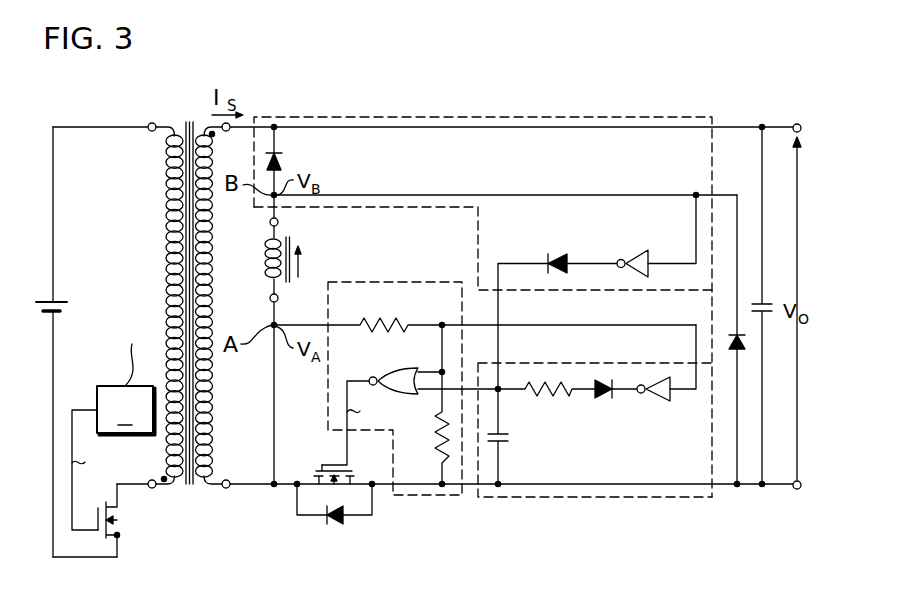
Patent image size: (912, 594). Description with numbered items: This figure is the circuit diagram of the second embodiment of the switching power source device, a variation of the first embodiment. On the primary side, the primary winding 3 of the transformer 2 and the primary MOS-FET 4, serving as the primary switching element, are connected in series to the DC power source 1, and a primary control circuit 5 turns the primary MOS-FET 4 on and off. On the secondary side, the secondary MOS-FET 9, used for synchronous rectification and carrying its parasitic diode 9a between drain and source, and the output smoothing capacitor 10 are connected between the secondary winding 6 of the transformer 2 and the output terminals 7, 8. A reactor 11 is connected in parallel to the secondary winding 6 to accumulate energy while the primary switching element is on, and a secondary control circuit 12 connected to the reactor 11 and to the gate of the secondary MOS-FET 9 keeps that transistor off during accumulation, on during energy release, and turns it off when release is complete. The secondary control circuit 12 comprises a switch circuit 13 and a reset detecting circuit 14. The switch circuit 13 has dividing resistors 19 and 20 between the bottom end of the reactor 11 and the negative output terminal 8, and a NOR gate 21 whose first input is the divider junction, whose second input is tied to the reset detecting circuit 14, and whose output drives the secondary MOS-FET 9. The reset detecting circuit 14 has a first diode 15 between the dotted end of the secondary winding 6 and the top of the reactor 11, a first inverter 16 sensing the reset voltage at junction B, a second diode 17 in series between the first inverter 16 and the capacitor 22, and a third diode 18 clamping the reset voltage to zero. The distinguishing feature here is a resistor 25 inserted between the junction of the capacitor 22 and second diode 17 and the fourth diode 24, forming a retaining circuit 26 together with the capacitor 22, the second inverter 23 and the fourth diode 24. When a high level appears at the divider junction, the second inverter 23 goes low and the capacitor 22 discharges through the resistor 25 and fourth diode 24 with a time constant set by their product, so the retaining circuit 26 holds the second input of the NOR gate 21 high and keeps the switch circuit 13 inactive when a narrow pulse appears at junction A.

The DC power source 1 is at (64, 299).
The transformer 2 is at (190, 126).
The primary winding 3 is at (166, 266).
The primary MOS-FET 4 is at (119, 520).
The primary control circuit 5 is at (113, 403).
The secondary winding 6 is at (215, 399).
The output terminal 7 is at (797, 123).
The negative output terminal 8 is at (797, 490).
The secondary MOS-FET 9 is at (320, 466).
The parasitic diode 9a is at (333, 521).
The output smoothing capacitor 10 is at (765, 303).
The reactor 11 is at (267, 263).
The secondary control circuit 12 is at (497, 523).
The switch circuit 13 is at (388, 278).
The reset detecting circuit 14 is at (472, 251).
The first diode 15 is at (283, 161).
The first inverter 16 is at (634, 250).
The second diode 17 is at (556, 254).
The third diode 18 is at (733, 334).
The dividing resistor 19 is at (400, 321).
The dividing resistor 20 is at (432, 433).
The NOR gate 21 is at (400, 366).
The capacitor 22 is at (510, 443).
The second inverter 23 is at (657, 402).
The fourth diode 24 is at (604, 399).
The resistor 25 is at (553, 398).
The retaining circuit 26 is at (595, 503).